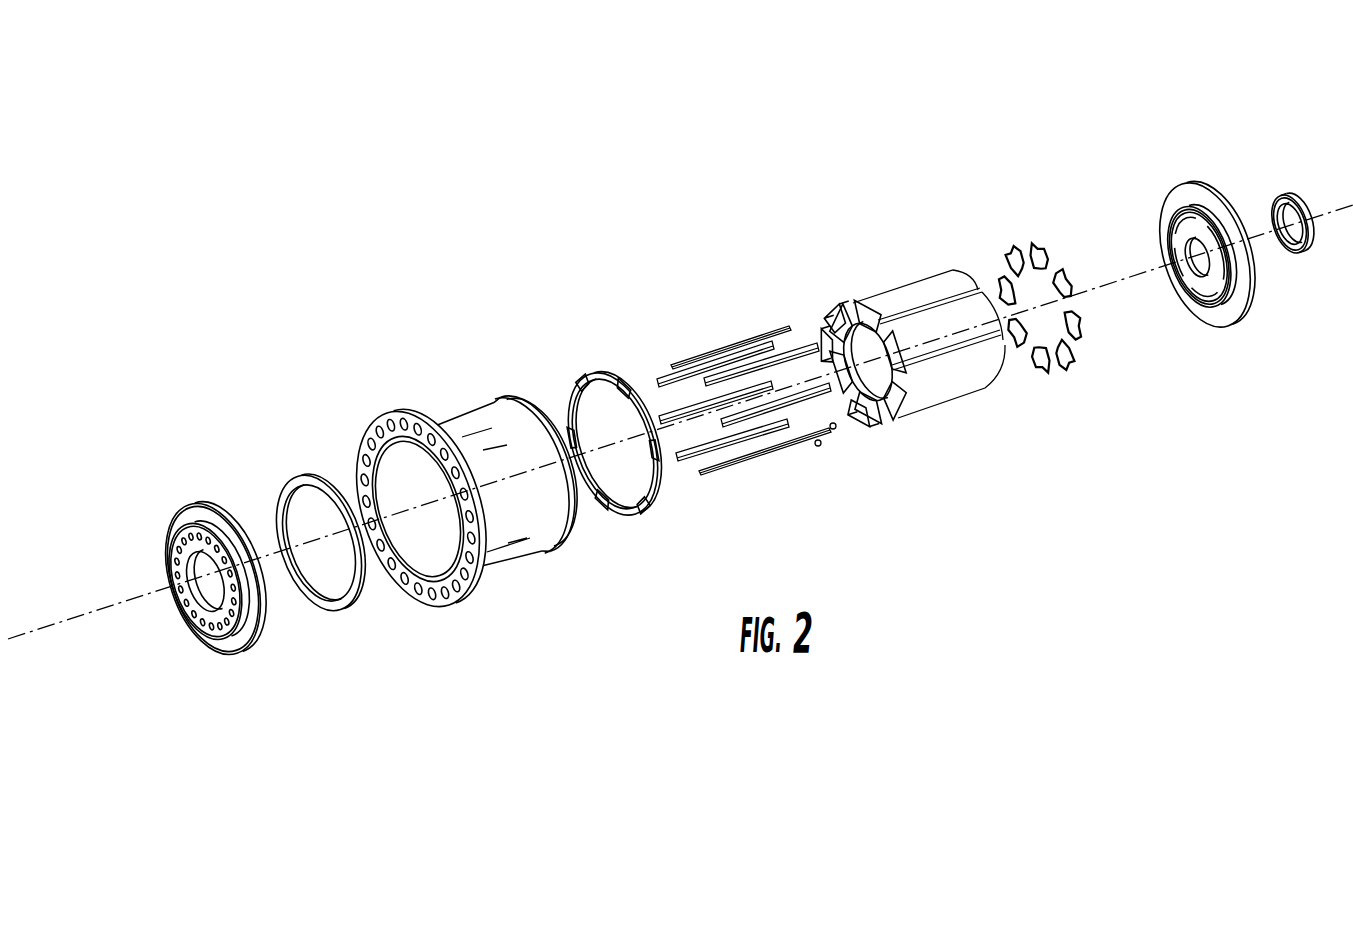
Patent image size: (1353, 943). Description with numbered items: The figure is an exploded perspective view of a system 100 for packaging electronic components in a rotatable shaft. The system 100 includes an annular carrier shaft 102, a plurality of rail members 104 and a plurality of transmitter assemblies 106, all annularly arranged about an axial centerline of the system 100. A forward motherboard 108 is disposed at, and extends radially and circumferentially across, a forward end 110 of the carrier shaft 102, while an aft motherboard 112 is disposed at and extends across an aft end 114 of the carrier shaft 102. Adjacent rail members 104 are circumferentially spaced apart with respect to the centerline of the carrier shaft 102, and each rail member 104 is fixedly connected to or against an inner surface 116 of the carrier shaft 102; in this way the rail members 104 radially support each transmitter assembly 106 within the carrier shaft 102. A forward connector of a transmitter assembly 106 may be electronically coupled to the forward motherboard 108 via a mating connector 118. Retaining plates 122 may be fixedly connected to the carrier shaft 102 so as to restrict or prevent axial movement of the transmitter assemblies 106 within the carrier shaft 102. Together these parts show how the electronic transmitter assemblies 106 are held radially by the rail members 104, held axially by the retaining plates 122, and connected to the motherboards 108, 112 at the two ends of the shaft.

The system 100 is at (1085, 98).
The annular carrier shaft 102 is at (473, 400).
The rail members 104 is at (747, 332).
The transmitter assemblies 106 is at (935, 262).
The forward motherboard 108 is at (212, 493).
The forward end 110 is at (417, 608).
The aft motherboard 112 is at (1175, 185).
The aft end 114 is at (558, 547).
The inner surface 116 is at (383, 563).
The mating connector 118 is at (503, 558).
The retaining plates 122 is at (1030, 240).